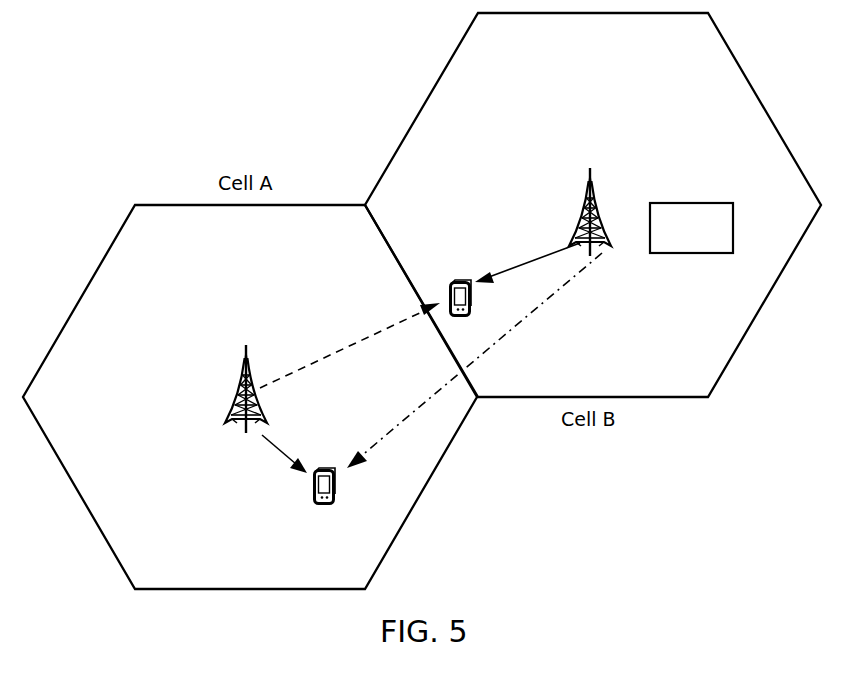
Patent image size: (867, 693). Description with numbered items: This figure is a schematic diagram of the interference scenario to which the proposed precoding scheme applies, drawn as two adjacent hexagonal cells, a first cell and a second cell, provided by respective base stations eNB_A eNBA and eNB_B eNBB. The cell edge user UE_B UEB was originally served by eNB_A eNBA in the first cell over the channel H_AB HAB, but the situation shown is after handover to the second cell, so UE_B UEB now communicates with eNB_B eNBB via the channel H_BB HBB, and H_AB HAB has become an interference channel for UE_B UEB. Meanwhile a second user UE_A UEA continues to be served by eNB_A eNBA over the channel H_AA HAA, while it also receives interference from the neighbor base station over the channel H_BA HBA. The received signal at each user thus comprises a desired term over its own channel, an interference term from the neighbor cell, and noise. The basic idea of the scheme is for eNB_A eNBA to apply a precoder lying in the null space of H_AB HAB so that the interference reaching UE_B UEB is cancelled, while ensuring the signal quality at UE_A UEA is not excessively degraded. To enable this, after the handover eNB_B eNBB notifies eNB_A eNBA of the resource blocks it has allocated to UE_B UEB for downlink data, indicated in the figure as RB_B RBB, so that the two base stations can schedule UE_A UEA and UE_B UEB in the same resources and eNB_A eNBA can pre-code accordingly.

The base station eNB_A eNBA is at (223, 389).
The base station eNB_B eNBB is at (618, 212).
The user UE_A UEA is at (327, 504).
The cell edge user UE_B UEB is at (447, 282).
The resource blocks RB_B RBB is at (691, 228).
The channel H_AA HAA is at (268, 454).
The interference channel H_AB HAB is at (350, 345).
The channel H_BB HBB is at (527, 254).
The interference channel H_BA HBA is at (474, 360).